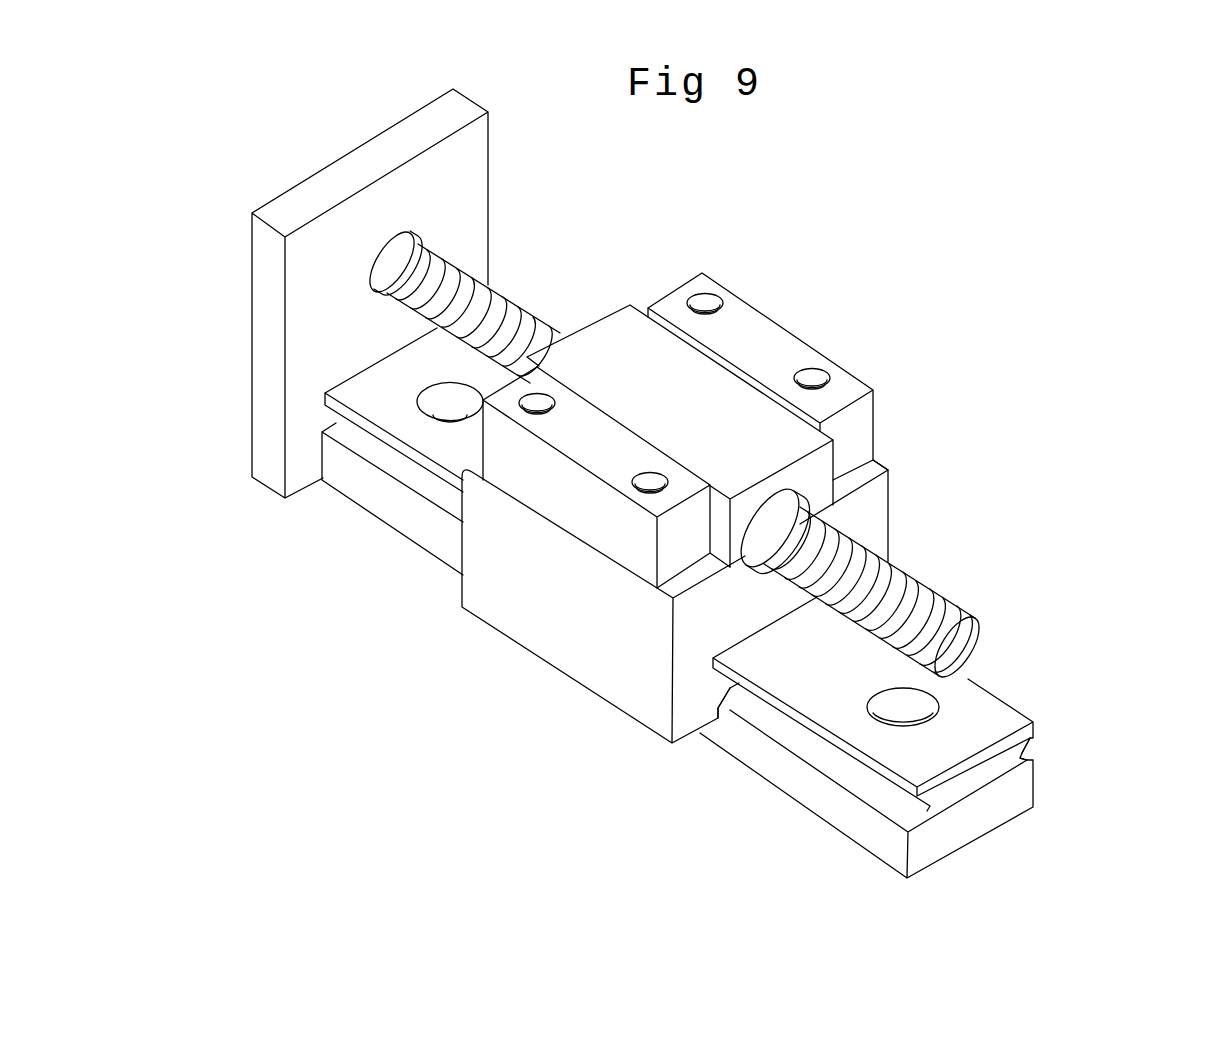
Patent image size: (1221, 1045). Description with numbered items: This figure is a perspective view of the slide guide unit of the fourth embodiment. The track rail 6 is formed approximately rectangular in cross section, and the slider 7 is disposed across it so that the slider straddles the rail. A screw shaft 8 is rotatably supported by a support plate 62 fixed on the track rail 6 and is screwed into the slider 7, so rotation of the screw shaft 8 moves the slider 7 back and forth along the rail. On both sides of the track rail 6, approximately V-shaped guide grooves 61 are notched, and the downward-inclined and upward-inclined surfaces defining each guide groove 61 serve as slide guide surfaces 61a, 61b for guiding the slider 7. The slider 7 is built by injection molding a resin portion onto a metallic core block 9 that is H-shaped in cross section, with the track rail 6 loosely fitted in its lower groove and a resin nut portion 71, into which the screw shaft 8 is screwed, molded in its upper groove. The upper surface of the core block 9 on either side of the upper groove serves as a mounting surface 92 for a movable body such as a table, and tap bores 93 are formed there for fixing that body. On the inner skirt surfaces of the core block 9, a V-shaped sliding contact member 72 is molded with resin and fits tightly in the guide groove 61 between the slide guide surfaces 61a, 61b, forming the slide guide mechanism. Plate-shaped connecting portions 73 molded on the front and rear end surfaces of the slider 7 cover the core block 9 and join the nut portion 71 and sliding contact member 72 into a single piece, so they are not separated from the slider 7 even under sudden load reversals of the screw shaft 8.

The track rail 6 is at (766, 616).
The guide groove 61 is at (955, 750).
The slide guide surface 61a is at (1037, 743).
The slide guide surface 61b is at (1030, 757).
The support plate 62 is at (266, 479).
The slider 7 is at (761, 536).
The nut portion 71 is at (625, 323).
The sliding contact member 72 is at (723, 687).
The connecting portion 73 is at (877, 518).
The screw shaft 8 is at (506, 300).
The core block 9 is at (577, 515).
The mounting surface 92 is at (766, 340).
The tap bore 93 is at (705, 300).